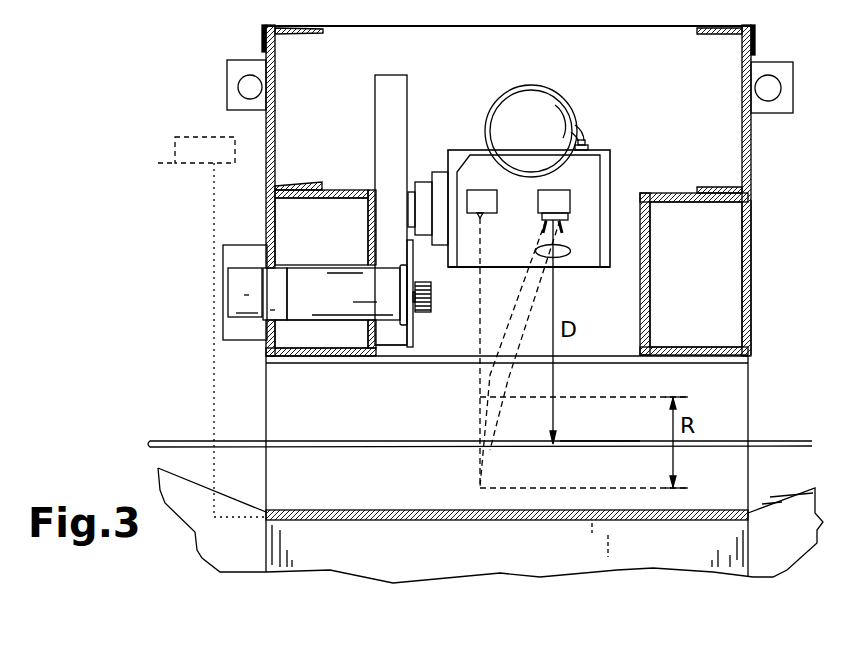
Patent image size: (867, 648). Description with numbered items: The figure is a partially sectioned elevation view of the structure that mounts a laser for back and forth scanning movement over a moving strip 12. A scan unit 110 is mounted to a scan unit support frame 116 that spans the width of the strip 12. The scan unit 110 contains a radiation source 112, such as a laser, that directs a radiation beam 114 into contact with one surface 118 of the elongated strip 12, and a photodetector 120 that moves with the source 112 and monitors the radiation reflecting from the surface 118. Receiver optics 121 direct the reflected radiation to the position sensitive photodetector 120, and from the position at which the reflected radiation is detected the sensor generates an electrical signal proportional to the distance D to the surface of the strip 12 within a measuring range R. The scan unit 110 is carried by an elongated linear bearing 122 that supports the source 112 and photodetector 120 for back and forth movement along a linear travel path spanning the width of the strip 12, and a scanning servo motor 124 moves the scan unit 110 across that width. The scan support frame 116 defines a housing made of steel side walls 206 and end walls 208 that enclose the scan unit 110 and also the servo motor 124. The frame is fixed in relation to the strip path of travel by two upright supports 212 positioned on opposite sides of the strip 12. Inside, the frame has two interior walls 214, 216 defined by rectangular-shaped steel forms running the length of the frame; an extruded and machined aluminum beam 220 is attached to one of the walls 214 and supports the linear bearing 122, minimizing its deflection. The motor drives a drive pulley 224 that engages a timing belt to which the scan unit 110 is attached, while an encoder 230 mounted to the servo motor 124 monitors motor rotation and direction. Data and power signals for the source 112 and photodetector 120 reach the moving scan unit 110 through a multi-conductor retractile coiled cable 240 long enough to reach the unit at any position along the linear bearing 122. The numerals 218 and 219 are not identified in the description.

The strip 12 is at (173, 438).
The scan unit 110 is at (583, 175).
The radiation source 112 is at (488, 205).
The radiation beam 114 is at (480, 382).
The scan unit support frame 116 is at (238, 125).
The surface 118 is at (585, 443).
The photodetector 120 is at (565, 220).
The receiver optics 121 is at (540, 255).
The linear bearing 122 is at (420, 193).
The scanning servo motor 124 is at (312, 293).
The side walls 206 is at (268, 188).
The end walls 208 is at (660, 91).
The upright supports 212 is at (725, 475).
The interior wall 214 is at (370, 223).
The interior wall 216 is at (650, 280).
The compartment 218 is at (266, 212).
The side wall 219 is at (750, 287).
The aluminum beam 220 is at (400, 107).
The drive pulley 224 is at (432, 293).
The encoder 230 is at (247, 313).
The retractile coiled cable 240 is at (507, 93).